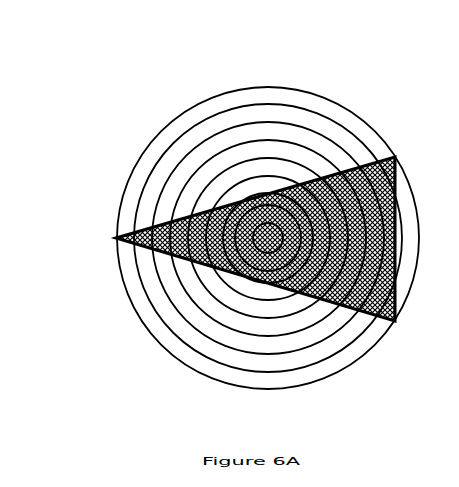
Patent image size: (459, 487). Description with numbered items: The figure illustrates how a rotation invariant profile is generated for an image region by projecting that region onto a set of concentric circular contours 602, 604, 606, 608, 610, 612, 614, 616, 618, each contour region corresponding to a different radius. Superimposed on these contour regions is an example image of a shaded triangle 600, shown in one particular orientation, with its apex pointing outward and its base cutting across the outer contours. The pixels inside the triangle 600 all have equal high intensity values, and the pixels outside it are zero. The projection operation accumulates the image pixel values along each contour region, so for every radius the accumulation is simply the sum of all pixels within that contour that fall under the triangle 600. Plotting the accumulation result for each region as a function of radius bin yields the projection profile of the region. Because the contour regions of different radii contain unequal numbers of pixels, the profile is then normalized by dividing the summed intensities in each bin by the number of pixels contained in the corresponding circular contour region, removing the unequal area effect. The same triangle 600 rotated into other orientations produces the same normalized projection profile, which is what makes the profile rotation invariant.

The triangle 600 is at (397, 190).
The circular contour 602 is at (319, 83).
The circular contour 604 is at (277, 94).
The circular contour 606 is at (244, 113).
The circular contour 608 is at (214, 135).
The circular contour 610 is at (200, 169).
The circular contour 612 is at (211, 288).
The circular contour 614 is at (206, 241).
The circular contour 616 is at (234, 206).
The circular contour 618 is at (241, 228).